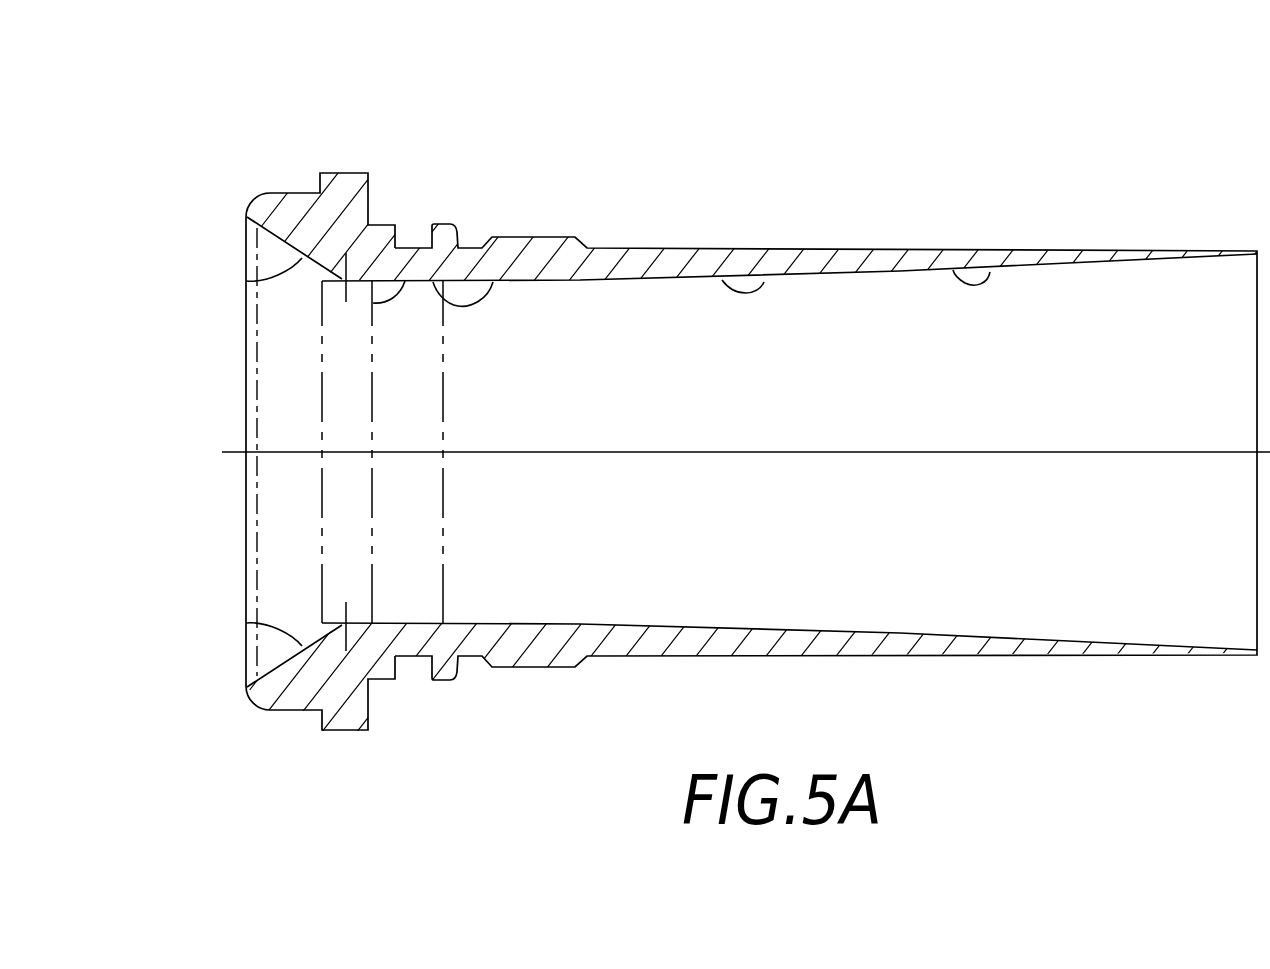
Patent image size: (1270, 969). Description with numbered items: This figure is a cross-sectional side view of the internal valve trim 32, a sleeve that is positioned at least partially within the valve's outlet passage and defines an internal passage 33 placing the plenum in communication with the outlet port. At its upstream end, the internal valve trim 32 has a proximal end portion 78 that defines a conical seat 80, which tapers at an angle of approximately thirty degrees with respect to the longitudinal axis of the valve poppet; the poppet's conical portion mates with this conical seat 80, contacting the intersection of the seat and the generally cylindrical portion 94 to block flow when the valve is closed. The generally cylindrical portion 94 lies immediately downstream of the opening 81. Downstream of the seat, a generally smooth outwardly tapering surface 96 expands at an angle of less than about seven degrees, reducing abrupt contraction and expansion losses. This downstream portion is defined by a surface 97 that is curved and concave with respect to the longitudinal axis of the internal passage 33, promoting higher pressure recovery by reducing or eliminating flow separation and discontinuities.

The internal valve trim 32 is at (898, 138).
The internal passage 33 is at (946, 385).
The proximal end portion 78 is at (280, 162).
The conical seat 80 is at (246, 281).
The opening 81 is at (405, 281).
The generally cylindrical portion 94 is at (493, 282).
The outwardly tapering surface 96 is at (764, 282).
The curved surface 97 is at (990, 272).